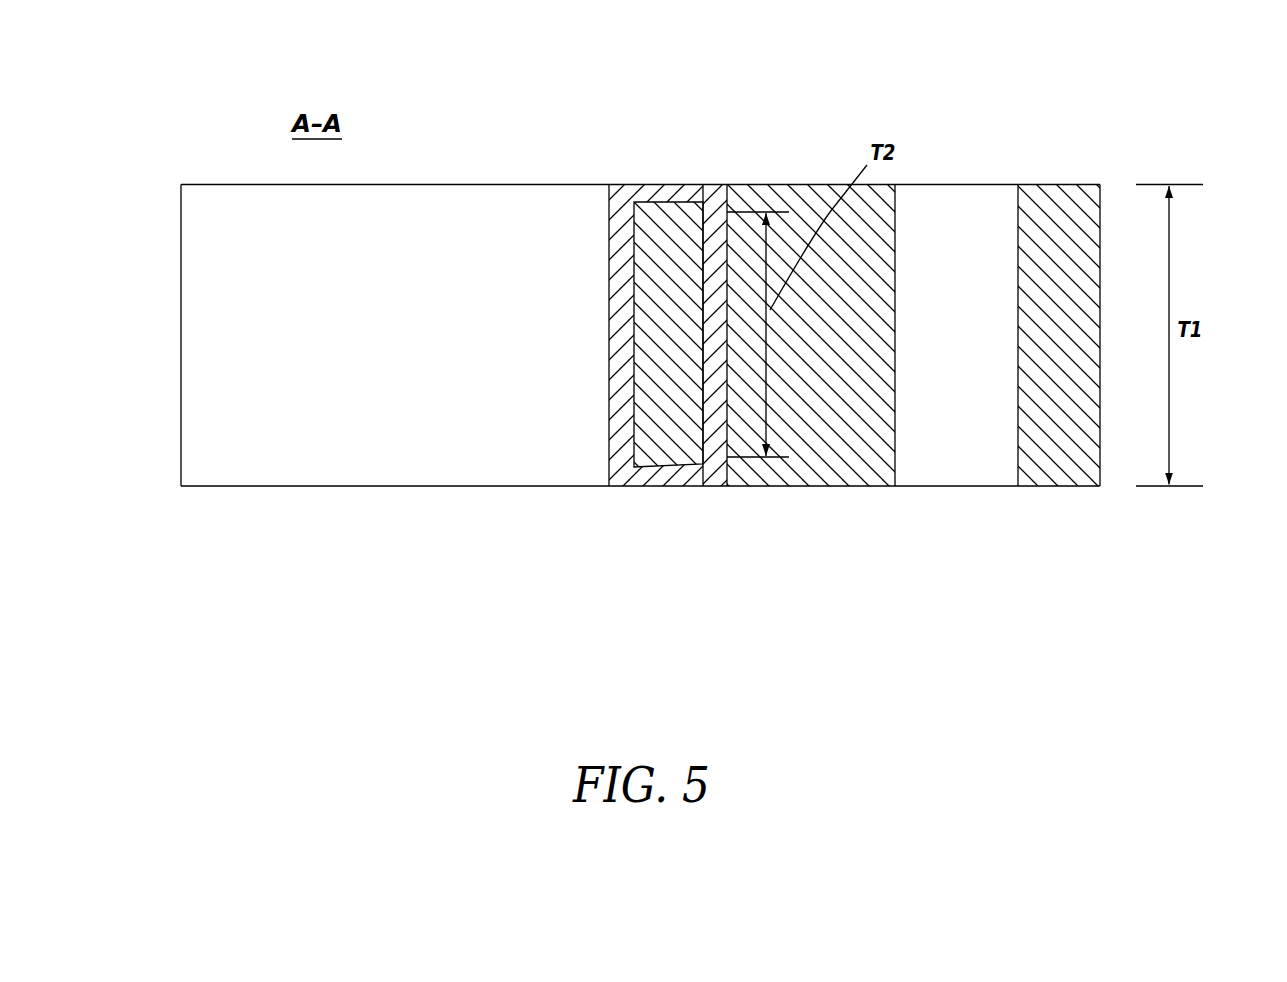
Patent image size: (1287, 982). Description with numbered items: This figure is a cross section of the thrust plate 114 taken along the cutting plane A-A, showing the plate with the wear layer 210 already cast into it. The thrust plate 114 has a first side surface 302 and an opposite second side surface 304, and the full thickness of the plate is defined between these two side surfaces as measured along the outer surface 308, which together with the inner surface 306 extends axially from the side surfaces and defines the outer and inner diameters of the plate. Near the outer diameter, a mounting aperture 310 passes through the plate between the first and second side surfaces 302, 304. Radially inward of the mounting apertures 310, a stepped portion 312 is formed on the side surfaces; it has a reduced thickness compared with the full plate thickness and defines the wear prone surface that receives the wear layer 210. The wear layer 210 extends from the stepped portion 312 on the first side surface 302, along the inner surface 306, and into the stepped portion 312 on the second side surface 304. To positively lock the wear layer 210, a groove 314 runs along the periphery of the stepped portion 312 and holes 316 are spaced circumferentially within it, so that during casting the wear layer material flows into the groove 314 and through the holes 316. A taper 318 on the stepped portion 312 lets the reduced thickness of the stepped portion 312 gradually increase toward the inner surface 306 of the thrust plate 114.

The thrust plate 114 is at (1172, 128).
The wear layer 210 is at (713, 476).
The first side surface 302 is at (835, 491).
The second side surface 304 is at (623, 183).
The inner surface 306 is at (604, 204).
The outer surface 308 is at (1104, 417).
The mounting apertures 310 is at (951, 266).
The stepped portion 312 is at (665, 240).
The groove 314 is at (762, 186).
The holes 316 is at (718, 266).
The taper 318 is at (692, 202).